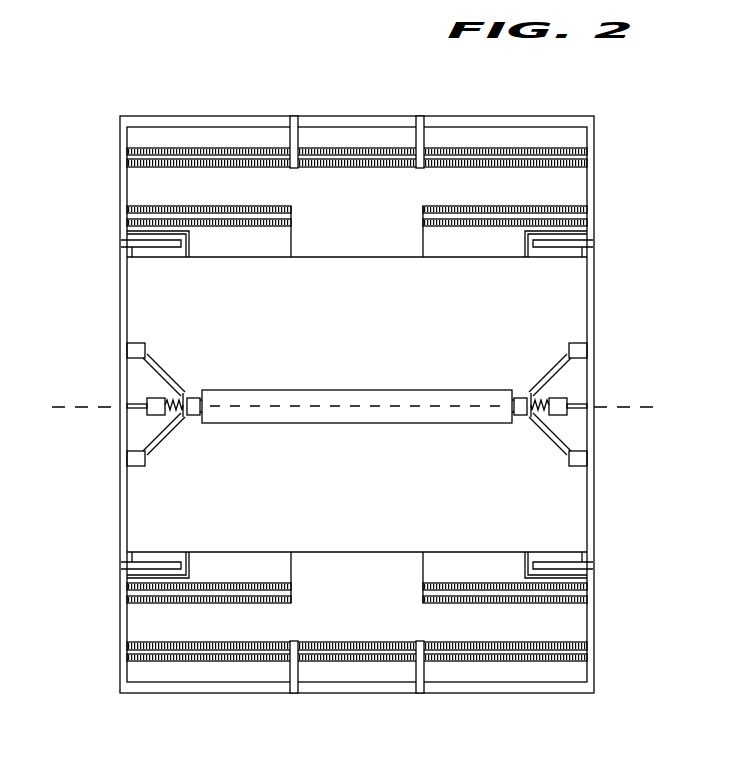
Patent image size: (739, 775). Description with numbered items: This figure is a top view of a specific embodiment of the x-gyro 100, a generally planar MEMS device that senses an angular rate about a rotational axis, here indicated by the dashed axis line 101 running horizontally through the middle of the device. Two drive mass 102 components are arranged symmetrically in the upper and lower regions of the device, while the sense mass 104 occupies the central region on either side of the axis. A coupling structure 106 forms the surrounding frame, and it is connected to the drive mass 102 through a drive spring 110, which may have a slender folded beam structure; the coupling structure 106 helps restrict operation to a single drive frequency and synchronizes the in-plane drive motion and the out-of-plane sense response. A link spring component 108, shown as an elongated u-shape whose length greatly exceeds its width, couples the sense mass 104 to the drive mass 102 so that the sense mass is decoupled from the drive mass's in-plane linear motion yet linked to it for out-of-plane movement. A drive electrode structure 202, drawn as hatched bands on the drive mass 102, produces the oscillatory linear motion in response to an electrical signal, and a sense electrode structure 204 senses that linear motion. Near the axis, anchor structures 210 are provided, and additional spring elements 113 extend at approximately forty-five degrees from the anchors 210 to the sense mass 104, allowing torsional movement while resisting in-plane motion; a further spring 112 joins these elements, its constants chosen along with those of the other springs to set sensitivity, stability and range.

The x-gyro 100 is at (371, 52).
The axis 101 is at (41, 407).
The drive mass 102 is at (340, 200).
The sense mass 104 is at (340, 330).
The coupling structure 106 is at (594, 304).
The link spring component 108 is at (155, 256).
The drive spring 110 is at (200, 116).
The spring 112 is at (178, 397).
The additional spring elements 113 is at (158, 372).
The drive electrode structure 202 is at (143, 150).
The sense electrode structure 204 is at (355, 137).
The anchor structures 210 is at (127, 351).